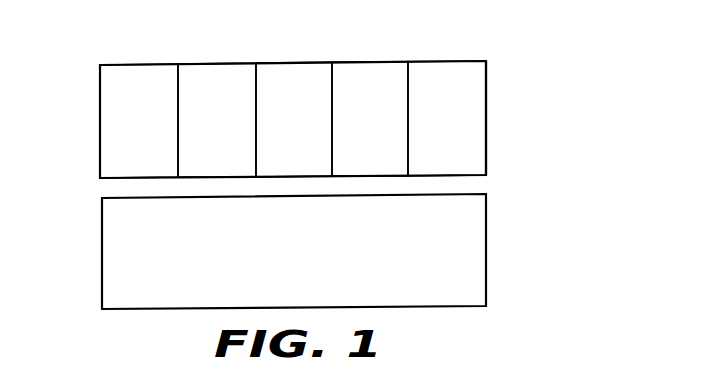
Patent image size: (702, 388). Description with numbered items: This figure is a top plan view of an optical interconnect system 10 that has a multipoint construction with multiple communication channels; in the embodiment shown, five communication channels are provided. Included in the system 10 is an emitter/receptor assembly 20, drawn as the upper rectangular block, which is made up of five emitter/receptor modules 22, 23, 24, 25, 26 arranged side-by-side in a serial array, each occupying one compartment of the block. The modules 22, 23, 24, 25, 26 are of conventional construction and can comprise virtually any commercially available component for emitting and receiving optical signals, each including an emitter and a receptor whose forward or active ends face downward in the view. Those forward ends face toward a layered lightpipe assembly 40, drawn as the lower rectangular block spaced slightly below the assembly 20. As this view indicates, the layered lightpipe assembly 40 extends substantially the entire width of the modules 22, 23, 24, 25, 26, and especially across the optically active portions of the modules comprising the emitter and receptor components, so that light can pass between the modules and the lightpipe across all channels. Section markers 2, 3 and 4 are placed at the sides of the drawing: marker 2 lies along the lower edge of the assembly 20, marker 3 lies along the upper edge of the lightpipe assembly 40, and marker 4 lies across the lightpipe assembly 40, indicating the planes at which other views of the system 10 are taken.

The optical interconnect system 10 is at (497, 44).
The emitter/receptor assembly 20 is at (106, 56).
The emitter/receptor module 22 is at (139, 121).
The emitter/receptor module 23 is at (217, 120).
The emitter/receptor module 24 is at (294, 119).
The emitter/receptor module 25 is at (370, 119).
The emitter/receptor module 26 is at (447, 118).
The layered lightpipe assembly 40 is at (107, 320).
The section line 2 is at (90, 178).
The section line 3 is at (90, 198).
The section line 4 is at (102, 254).